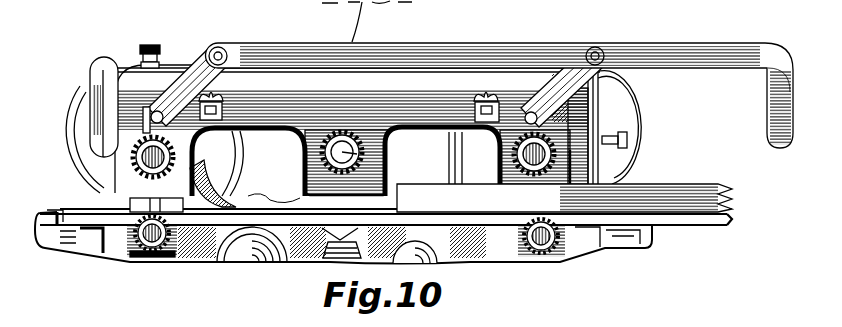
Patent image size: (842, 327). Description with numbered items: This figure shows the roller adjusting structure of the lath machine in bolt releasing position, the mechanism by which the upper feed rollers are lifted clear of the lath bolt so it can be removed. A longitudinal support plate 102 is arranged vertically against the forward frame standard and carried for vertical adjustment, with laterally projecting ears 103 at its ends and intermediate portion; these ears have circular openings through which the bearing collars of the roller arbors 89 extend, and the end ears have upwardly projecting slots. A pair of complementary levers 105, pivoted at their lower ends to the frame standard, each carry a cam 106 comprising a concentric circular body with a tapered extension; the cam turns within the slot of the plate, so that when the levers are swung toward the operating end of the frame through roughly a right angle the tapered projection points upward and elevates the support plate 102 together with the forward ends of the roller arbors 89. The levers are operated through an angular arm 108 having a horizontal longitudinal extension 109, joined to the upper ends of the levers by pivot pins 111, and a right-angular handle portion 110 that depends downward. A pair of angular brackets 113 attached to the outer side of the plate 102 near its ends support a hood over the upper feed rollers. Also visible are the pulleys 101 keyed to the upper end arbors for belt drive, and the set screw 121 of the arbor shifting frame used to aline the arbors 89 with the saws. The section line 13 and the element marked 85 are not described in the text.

The section line 13- 13 is at (148, 255).
The lever 85 is at (214, 7).
The roller arbor 89 is at (384, 159).
The pulley 101 is at (72, 113).
The longitudinal support plate 102 is at (408, 82).
The laterally projecting ear 103 is at (63, 192).
The lever 105 is at (193, 63).
The cam 106 is at (343, 262).
The angular arm 108 is at (750, 55).
The longitudinal extension 109 is at (637, 53).
The handle portion 110 is at (768, 110).
The pivot pin 111 is at (318, 32).
The angular bracket 113 is at (508, 100).
The set screw 121 is at (628, 139).